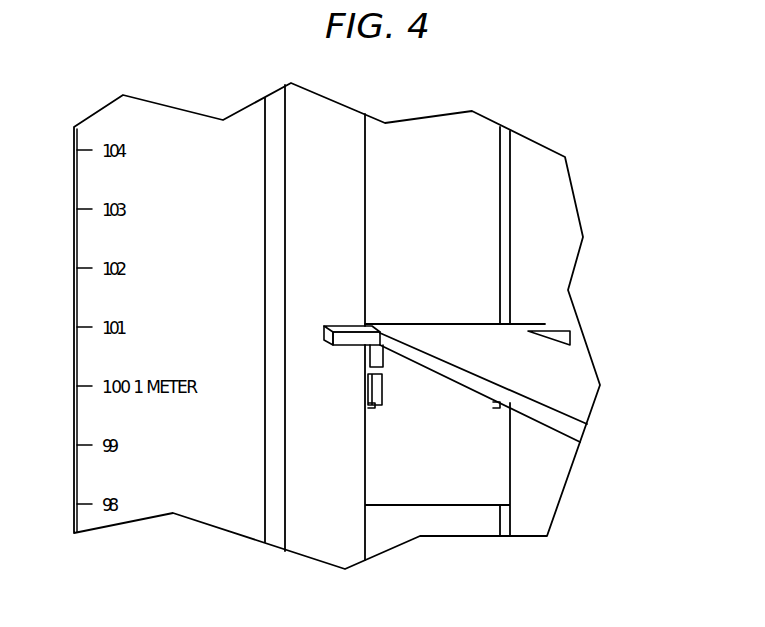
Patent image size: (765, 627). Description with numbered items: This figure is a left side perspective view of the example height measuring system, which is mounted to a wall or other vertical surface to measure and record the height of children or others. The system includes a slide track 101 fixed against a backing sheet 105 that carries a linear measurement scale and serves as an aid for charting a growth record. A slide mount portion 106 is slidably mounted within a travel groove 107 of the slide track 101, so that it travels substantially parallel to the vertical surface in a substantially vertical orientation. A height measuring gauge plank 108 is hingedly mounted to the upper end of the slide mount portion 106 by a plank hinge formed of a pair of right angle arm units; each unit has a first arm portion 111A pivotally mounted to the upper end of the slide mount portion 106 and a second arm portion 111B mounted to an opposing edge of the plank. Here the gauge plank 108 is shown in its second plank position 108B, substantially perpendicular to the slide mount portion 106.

The slide track 101 is at (277, 165).
The backing sheet 105 is at (203, 262).
The slide mount portion 106 is at (470, 448).
The travel groove 107 is at (472, 222).
The height measuring gauge plank 108 is at (535, 368).
The second plank position 108B is at (487, 387).
The first arm portion 111A is at (350, 327).
The second arm portion 111B is at (375, 362).